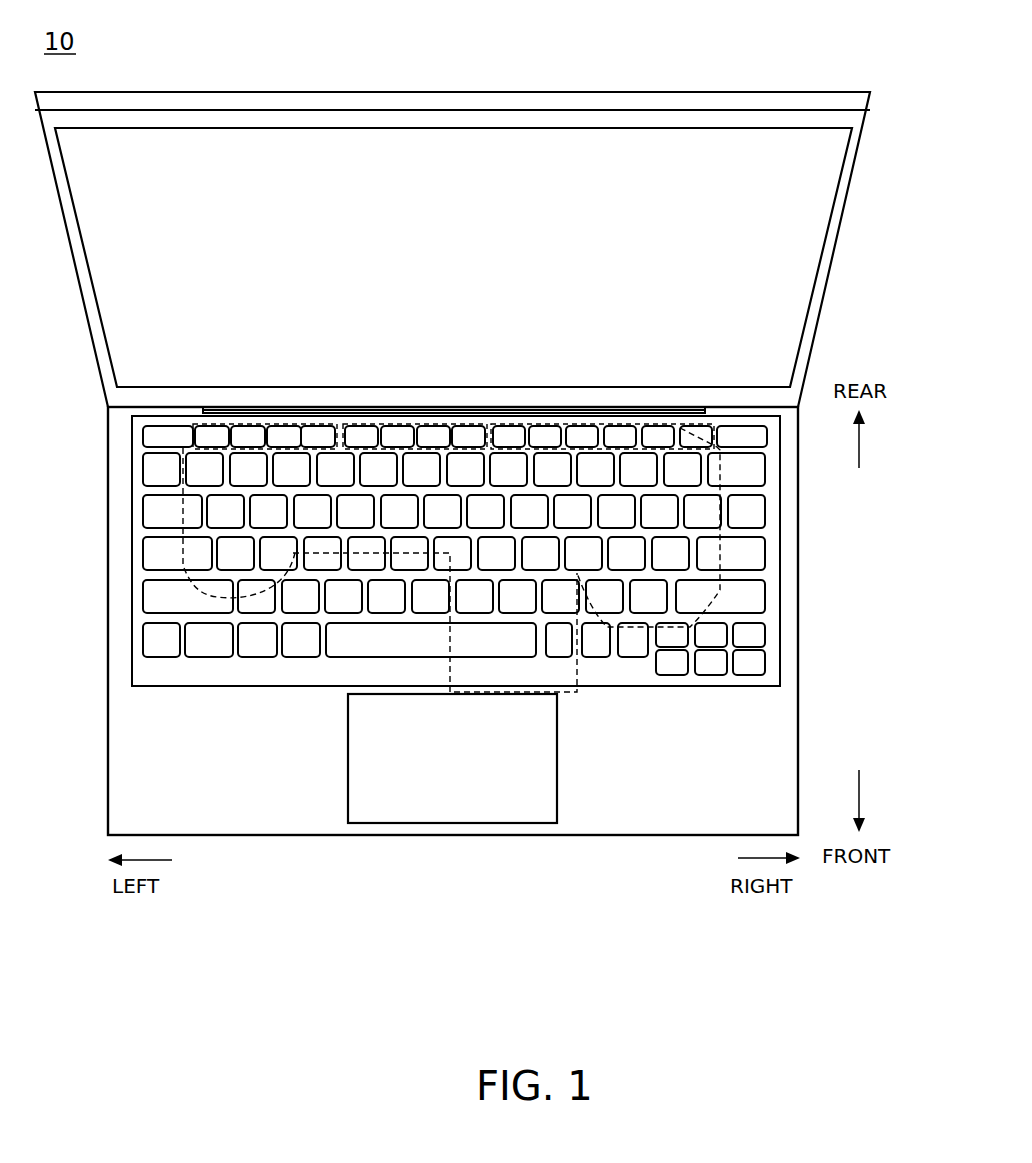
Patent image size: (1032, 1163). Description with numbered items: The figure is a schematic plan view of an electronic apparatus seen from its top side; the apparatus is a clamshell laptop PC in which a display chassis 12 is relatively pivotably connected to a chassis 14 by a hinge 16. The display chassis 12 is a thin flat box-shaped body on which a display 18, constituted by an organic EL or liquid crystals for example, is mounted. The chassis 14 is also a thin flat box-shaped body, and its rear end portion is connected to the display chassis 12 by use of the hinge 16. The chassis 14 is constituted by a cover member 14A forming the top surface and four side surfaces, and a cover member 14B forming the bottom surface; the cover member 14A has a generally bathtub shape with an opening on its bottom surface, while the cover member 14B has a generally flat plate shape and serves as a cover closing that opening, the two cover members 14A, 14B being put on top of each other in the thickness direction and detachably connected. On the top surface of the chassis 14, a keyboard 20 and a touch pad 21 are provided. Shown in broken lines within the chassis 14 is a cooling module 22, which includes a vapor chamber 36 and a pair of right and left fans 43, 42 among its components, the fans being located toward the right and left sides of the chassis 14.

The display chassis 12 is at (858, 176).
The chassis 14 is at (818, 585).
The cover member 14A is at (130, 742).
The cover member 14B is at (130, 806).
The hinge 16 is at (536, 430).
The display 18 is at (652, 148).
The keyboard 20 is at (598, 682).
The touch pad 21 is at (424, 796).
The cooling module 22 is at (315, 575).
The vapor chamber 36 is at (345, 422).
The left fan 42 is at (215, 600).
The right fan 43 is at (717, 592).